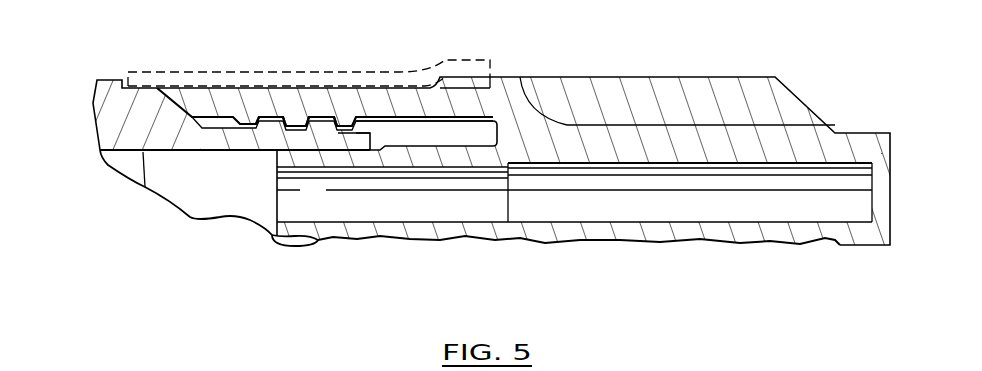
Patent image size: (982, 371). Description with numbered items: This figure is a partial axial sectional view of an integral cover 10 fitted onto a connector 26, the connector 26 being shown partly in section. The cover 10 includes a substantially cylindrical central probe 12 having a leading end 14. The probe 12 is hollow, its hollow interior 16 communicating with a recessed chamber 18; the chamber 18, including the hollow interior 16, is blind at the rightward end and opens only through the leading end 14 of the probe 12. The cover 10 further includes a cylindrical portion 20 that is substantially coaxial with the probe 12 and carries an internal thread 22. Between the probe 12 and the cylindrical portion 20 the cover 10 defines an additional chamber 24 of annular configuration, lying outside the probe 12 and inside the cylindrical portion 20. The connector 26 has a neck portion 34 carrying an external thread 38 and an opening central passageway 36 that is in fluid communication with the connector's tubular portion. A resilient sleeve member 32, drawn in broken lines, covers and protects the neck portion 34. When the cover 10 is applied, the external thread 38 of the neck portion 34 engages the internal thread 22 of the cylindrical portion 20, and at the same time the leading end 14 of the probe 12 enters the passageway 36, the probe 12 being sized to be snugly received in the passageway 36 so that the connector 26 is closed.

The integral cover 10 is at (557, 76).
The central probe 12 is at (272, 233).
The leading end 14 is at (307, 222).
The hollow interior 16 is at (375, 210).
The recessed chamber 18 is at (792, 208).
The cylindrical portion 20 is at (329, 117).
The internal thread 22 is at (233, 119).
The additional chamber 24 is at (458, 122).
The connector 26 is at (107, 116).
The resilient sleeve member 32 is at (176, 73).
The neck portion 34 is at (213, 152).
The central passageway 36 is at (145, 187).
The external thread 38 is at (273, 117).